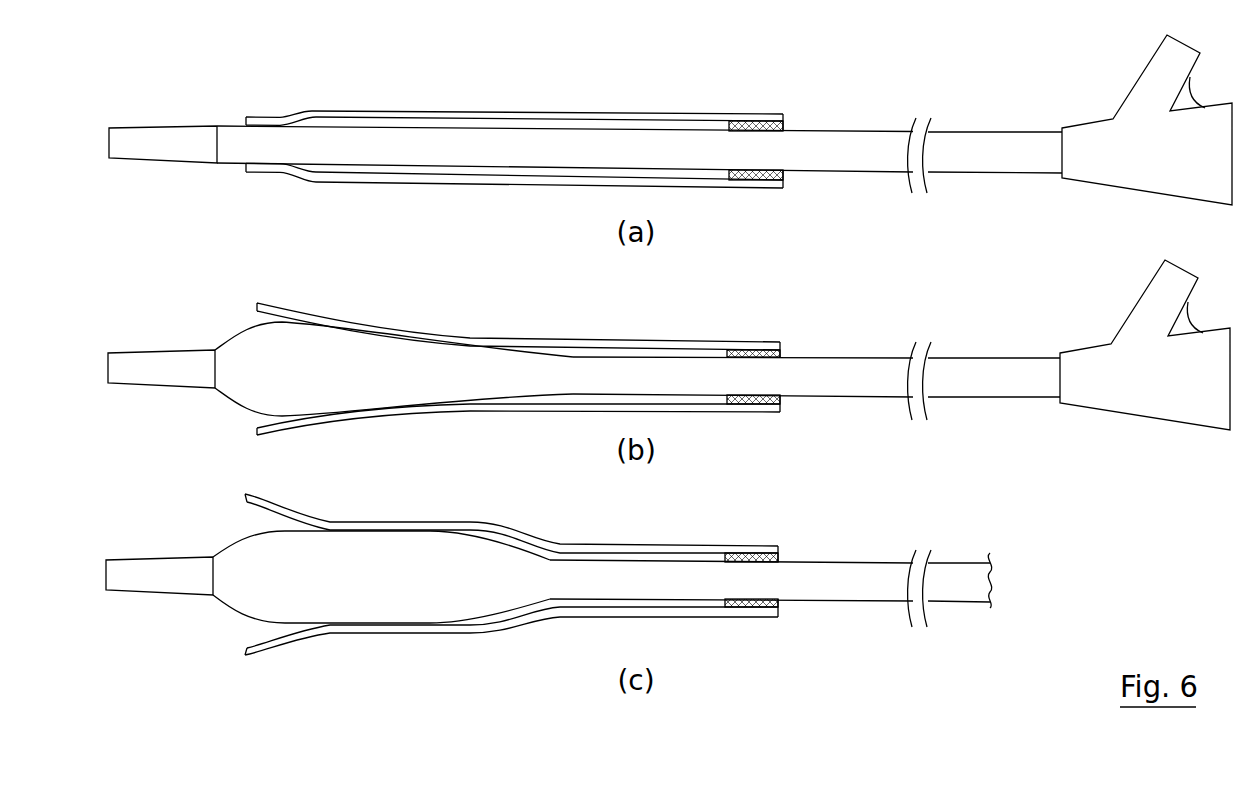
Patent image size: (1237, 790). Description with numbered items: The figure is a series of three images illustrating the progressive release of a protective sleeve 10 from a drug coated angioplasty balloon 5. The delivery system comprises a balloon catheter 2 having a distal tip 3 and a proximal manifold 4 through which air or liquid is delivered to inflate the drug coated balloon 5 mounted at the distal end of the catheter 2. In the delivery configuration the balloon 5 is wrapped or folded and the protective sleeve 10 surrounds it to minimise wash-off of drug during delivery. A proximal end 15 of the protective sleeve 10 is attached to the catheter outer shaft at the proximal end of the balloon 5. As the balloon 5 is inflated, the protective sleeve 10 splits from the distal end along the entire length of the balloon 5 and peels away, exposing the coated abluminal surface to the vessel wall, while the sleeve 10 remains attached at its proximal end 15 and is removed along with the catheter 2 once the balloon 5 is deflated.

The balloon catheter 2 is at (970, 168).
The distal tip 3 is at (170, 148).
The proximal manifold 4 is at (1112, 127).
The drug coated balloon 5 is at (370, 128).
The protective sleeve 10 is at (468, 115).
The proximal end of the protective sleeve 15 is at (750, 128).